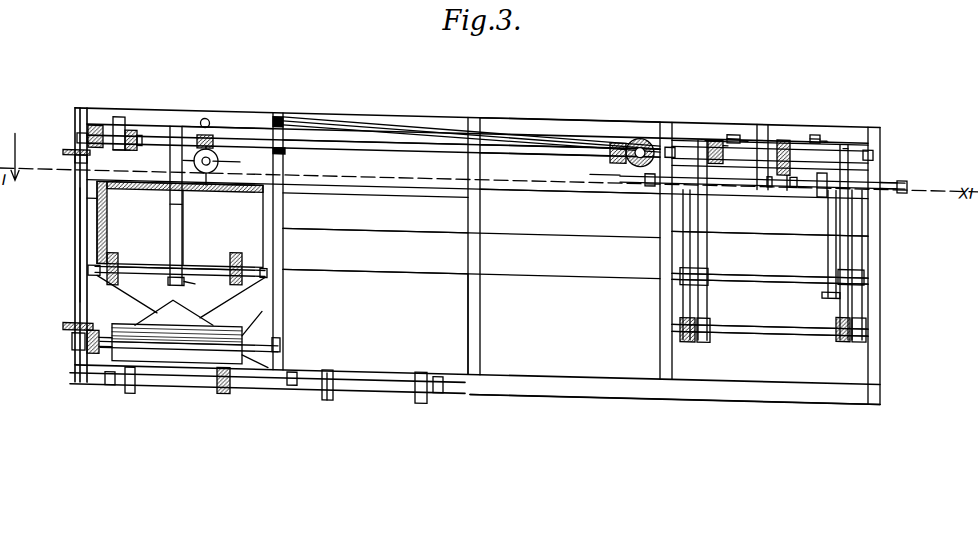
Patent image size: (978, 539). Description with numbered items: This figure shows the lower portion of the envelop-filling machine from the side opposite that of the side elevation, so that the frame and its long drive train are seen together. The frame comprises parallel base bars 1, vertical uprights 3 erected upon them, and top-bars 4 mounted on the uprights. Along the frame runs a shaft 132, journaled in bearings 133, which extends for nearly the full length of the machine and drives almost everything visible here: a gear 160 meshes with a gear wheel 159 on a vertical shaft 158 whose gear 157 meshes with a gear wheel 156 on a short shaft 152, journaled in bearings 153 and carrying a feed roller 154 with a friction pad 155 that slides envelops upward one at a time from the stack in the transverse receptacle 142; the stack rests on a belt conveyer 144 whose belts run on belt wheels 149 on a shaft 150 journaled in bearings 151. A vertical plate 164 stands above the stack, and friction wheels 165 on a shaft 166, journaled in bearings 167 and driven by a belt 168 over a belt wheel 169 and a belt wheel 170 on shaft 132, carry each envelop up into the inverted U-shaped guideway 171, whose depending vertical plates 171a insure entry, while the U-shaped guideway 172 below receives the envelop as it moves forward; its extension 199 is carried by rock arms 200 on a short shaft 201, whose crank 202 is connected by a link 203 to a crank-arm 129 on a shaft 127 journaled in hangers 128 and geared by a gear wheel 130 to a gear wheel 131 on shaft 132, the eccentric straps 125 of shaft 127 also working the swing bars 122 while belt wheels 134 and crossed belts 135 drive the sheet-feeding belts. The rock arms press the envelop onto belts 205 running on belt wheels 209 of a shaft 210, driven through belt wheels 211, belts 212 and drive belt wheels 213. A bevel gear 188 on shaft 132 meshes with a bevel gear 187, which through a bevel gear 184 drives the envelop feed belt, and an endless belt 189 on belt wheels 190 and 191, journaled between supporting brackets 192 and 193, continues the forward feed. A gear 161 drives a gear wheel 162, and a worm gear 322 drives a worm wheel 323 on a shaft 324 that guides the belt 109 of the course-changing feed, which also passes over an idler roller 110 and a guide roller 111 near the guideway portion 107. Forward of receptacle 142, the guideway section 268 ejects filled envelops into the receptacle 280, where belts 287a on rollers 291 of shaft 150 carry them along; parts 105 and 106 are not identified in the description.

The base bars 1 is at (600, 380).
The vertical uprights 3 is at (75, 291).
The top-bars 4 is at (534, 106).
The top bar 105 is at (230, 106).
The brace 106 is at (450, 126).
The guideway portion 107 is at (717, 120).
The belt 109 is at (118, 150).
The idler roller 110 is at (285, 108).
The guide roller 111 is at (200, 128).
The swing bars 122 is at (735, 116).
The eccentric straps 125 is at (730, 122).
The shaft 127 is at (797, 170).
The hangers 128 is at (738, 112).
The crank-arm 129 is at (822, 178).
The gear wheel 130 is at (770, 170).
The gear wheel 131 is at (783, 120).
The shaft 132 is at (375, 158).
The bearings 133 is at (117, 114).
The belt wheels 134 is at (714, 122).
The crossed belts 135 is at (701, 120).
The receptacle 142 is at (270, 296).
The belt conveyer 144 is at (127, 392).
The belt wheels 149 is at (135, 392).
The shaft 150 is at (197, 383).
The bearings 151 is at (106, 382).
The short shaft 152 is at (276, 326).
The bearings 153 is at (72, 345).
The feed roller 154 is at (222, 320).
The friction pad 155 is at (140, 321).
The gear wheel 156 is at (97, 330).
The gear 157 is at (65, 321).
The vertical shaft 158 is at (80, 221).
The gear wheel 159 is at (68, 150).
The gear 160 is at (80, 123).
The gear 161 is at (132, 125).
The gear wheel 162 is at (115, 182).
The vertical plate 164 is at (174, 249).
The friction wheels 165 is at (112, 250).
The shaft 166 is at (160, 264).
The bearings 167 is at (80, 244).
The belt 168 is at (171, 203).
The belt wheel 169 is at (184, 278).
The belt wheel 170 is at (176, 124).
The guideway 171 is at (248, 180).
The vertical plates 171a is at (92, 196).
The guideway 172 is at (375, 244).
The bevel gear 184 is at (600, 160).
The bevel gear 187 is at (640, 122).
The bevel gear 188 is at (618, 128).
The endless belt 189 is at (590, 170).
The belt wheel 190 is at (625, 172).
The belt wheel 191 is at (908, 158).
The supporting bracket 192 is at (648, 172).
The supporting bracket 193 is at (898, 160).
The extension 199 is at (770, 248).
The rock arms 200 is at (683, 232).
The short shaft 201 is at (766, 265).
The crank 202 is at (830, 283).
The link 203 is at (828, 238).
The belts 205 is at (683, 283).
The belt wheels 209 is at (686, 325).
The shaft 210 is at (767, 316).
The belt wheels 211 is at (697, 322).
The belts 212 is at (700, 282).
The drive belt wheels 213 is at (690, 124).
The guideway section 268 is at (375, 300).
The receptacle 280 is at (480, 312).
The belts 287a is at (322, 395).
The rollers 291 is at (416, 393).
The worm gear 322 is at (207, 113).
The worm wheel 323 is at (218, 158).
The shaft 324 is at (205, 170).